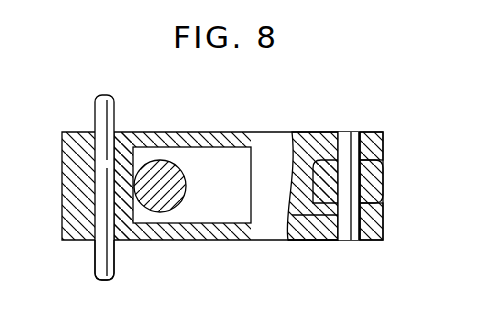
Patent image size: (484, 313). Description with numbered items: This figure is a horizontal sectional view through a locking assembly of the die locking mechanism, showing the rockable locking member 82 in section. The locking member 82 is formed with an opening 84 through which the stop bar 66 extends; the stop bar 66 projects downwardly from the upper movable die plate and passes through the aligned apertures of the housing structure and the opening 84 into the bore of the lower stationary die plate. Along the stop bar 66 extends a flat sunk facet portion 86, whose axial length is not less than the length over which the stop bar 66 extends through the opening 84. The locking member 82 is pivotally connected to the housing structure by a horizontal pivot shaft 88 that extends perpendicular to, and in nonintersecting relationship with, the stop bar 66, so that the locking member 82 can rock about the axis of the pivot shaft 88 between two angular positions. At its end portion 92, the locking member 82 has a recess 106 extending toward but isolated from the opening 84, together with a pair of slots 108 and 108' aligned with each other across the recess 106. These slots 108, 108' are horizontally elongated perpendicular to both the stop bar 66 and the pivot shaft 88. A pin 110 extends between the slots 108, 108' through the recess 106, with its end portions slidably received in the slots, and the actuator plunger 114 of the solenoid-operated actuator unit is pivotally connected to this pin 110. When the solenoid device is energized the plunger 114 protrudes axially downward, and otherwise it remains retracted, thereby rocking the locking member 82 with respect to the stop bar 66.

The stop bar 66 is at (185, 199).
The rockable locking member 82 is at (77, 124).
The opening 84 is at (207, 149).
The flat sunk facet portion 86 is at (122, 163).
The pivot shaft 88 is at (115, 266).
The end portion 92 is at (383, 217).
The recess 106 is at (300, 234).
The slot 108 is at (374, 203).
The slot 108' is at (312, 159).
The pin 110 is at (350, 132).
The actuator plunger 114 is at (383, 181).